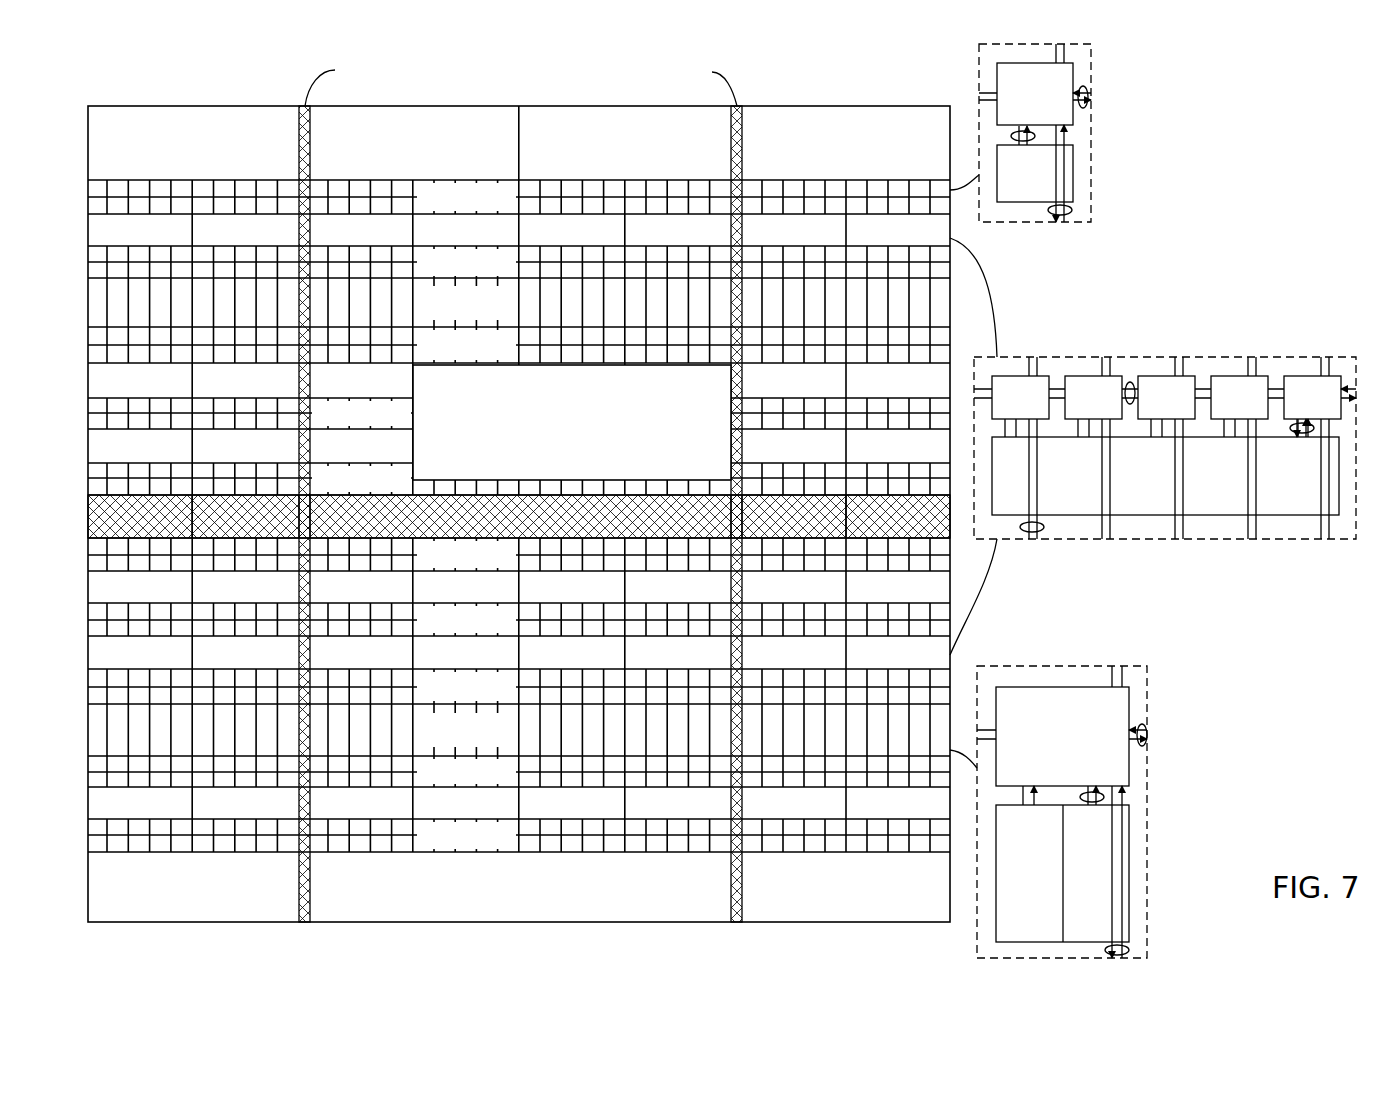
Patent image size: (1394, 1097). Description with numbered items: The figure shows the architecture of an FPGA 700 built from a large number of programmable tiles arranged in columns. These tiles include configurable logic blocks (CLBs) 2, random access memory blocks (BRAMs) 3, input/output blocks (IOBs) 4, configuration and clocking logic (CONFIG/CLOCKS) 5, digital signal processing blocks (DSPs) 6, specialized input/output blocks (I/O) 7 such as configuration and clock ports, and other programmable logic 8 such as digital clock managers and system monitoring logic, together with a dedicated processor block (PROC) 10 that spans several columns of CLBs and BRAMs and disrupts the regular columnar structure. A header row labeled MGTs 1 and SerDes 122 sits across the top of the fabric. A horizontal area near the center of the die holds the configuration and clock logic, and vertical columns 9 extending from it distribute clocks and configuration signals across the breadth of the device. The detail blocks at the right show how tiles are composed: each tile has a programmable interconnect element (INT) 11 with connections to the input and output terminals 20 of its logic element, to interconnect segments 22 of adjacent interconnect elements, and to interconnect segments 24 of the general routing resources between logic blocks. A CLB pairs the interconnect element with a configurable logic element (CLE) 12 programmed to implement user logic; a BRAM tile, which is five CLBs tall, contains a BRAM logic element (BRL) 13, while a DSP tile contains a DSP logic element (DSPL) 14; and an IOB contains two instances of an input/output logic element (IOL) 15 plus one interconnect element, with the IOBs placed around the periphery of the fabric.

The multi-gigabit transceivers (MGTs) 1 is at (451, 133).
The configurable logic blocks (CLBs) 2 is at (396, 488).
The random access memory blocks (BRAMs) 3 is at (403, 457).
The input/output blocks (IOBs) 4 is at (499, 743).
The configuration and clocking logic (CONFIG/CLOCKS) 5 is at (617, 527).
The digital signal processing blocks (DSPs) 6 is at (499, 665).
The specialized input/output blocks (I/O) 7 is at (818, 527).
The other programmable logic 8 is at (512, 519).
The vertical columns 9 is at (692, 83).
The processor block (PROC) 10 is at (619, 430).
The programmable interconnect element (INT) 11 is at (1044, 113).
The configurable logic element (CLE) 12 is at (1045, 195).
The BRAM logic element (BRL) 13 is at (1159, 497).
The DSP logic element (DSPL) 14 is at (1293, 497).
The input/output logic element (IOL) 15 is at (1103, 908).
The input and output terminals 20 is at (1011, 136).
The interconnect segments of adjacent programmable interconnect elements 22 is at (1088, 92).
The interconnect segments of general routing resources 24 is at (1072, 208).
The SerDes 122 is at (654, 151).
The FPGA 700 is at (1272, 114).